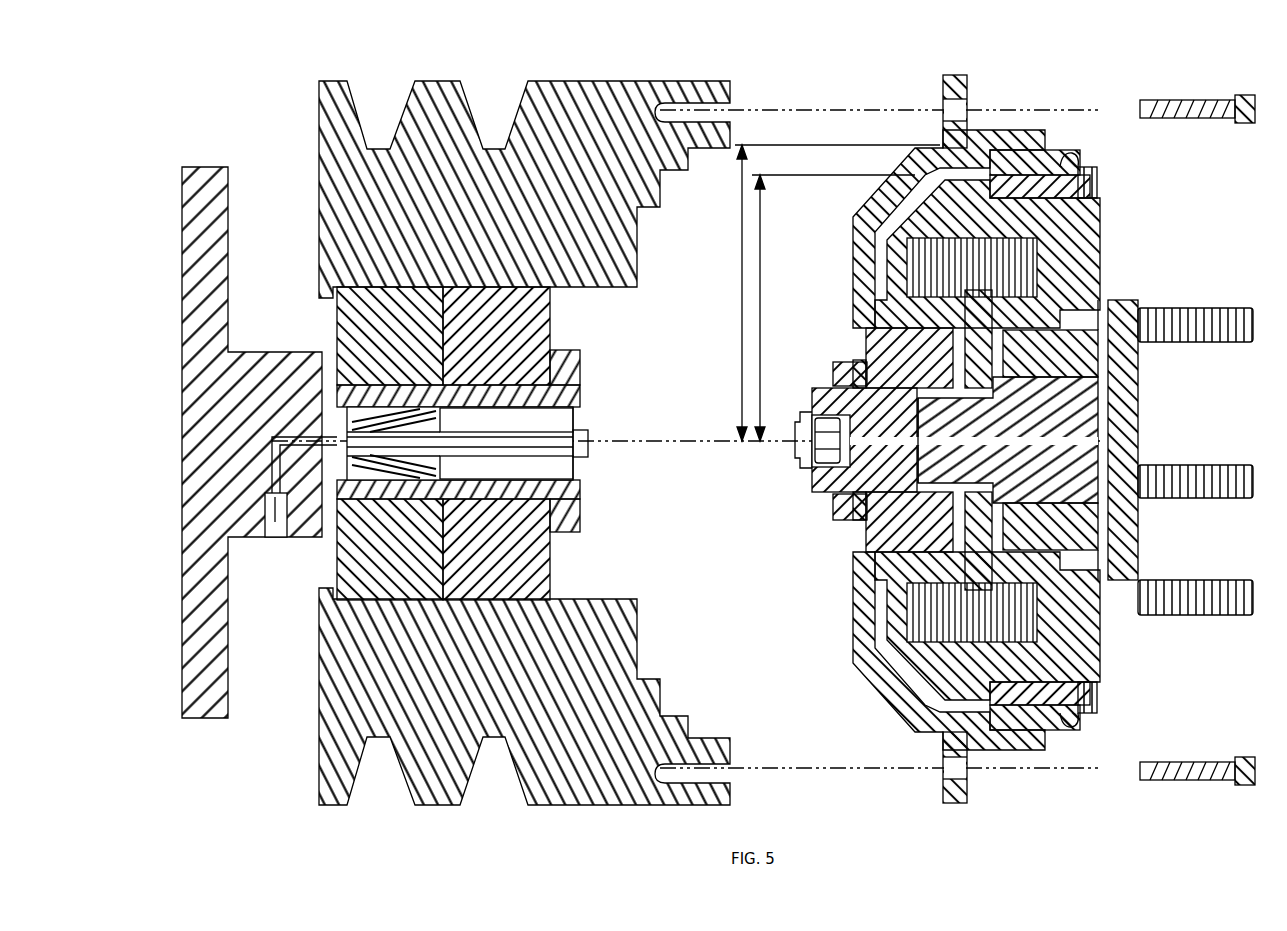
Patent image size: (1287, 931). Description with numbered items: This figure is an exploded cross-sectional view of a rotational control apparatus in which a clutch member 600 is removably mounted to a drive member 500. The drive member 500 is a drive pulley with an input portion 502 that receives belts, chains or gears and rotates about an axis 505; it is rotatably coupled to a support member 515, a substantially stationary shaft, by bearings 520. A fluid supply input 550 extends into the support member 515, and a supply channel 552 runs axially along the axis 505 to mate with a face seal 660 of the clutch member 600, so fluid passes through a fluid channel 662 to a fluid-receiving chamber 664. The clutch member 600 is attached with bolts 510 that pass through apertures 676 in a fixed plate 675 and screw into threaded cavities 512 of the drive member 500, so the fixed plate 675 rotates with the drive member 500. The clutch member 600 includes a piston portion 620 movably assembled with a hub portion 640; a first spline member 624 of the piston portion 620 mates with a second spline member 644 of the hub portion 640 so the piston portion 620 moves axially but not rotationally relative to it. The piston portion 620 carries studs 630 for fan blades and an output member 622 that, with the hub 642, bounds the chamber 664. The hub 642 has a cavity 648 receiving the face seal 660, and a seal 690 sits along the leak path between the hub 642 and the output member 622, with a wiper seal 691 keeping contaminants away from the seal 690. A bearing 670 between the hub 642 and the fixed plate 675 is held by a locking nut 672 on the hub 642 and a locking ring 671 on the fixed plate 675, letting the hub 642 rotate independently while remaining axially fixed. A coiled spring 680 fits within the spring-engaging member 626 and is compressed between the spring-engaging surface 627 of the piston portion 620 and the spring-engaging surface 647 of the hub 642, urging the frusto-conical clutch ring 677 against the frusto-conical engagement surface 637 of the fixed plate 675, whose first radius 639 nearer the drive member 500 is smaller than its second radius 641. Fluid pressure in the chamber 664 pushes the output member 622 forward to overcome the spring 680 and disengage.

The drive member 500 is at (241, 78).
The input portion 502 is at (408, 82).
The axis 505 is at (648, 452).
The bolts 510 is at (1178, 97).
The threaded cavities 512 is at (700, 770).
The support member 515 is at (210, 166).
The bearings 520 is at (345, 557).
The fluid supply input 550 is at (273, 524).
The supply channel 552 is at (590, 440).
The clutch member 600 is at (900, 72).
The piston portion 620 is at (1124, 217).
The output member 622 is at (1120, 522).
The first spline member 624 is at (1085, 355).
The spring-engaging member 626 is at (893, 296).
The spring-engaging surface 627 is at (905, 622).
The studs 630 is at (1243, 343).
The frusto-conical engagement surface 637 is at (1045, 728).
The first radius 639 is at (760, 245).
The hub portion 640 is at (838, 690).
The second radius 641 is at (742, 198).
The hub 642 is at (860, 376).
The second spline member 644 is at (1100, 398).
The spring-engaging surface 647 is at (1060, 650).
The cavity 648 is at (840, 380).
The face seal 660 is at (822, 452).
The fluid channel 662 is at (810, 440).
The fluid-receiving chamber 664 is at (1040, 272).
The bearing 670 is at (890, 522).
The locking ring 671 is at (862, 326).
The locking nut 672 is at (845, 498).
The fixed plate 675 is at (857, 270).
The apertures 676 is at (941, 110).
The frusto-conical clutch ring 677 is at (1000, 168).
The spring 680 is at (925, 258).
The seal 690 is at (1090, 187).
The wiper seal 691 is at (1068, 162).